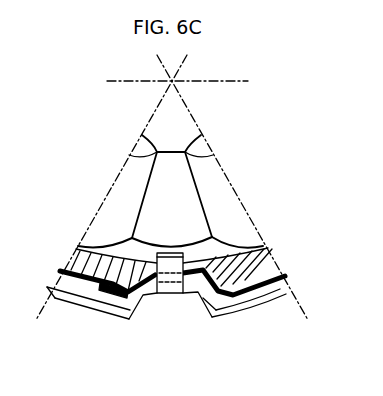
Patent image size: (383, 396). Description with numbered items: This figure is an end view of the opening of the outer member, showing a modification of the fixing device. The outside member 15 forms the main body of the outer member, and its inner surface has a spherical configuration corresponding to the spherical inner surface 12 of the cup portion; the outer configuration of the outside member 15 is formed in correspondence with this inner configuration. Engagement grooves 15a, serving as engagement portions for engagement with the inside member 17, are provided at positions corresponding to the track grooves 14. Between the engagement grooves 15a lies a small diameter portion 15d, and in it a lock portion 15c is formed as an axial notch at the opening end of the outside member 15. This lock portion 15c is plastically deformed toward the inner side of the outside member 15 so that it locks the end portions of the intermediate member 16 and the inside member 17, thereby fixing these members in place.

The spherical inner surface 12 is at (232, 213).
The track grooves 14 is at (178, 185).
The outside member 15 is at (164, 312).
The engagement grooves 15a is at (66, 290).
The lock portion 15c is at (168, 294).
The small diameter portion 15d is at (191, 296).
The intermediate member 16 is at (260, 292).
The inside member 17 is at (272, 255).